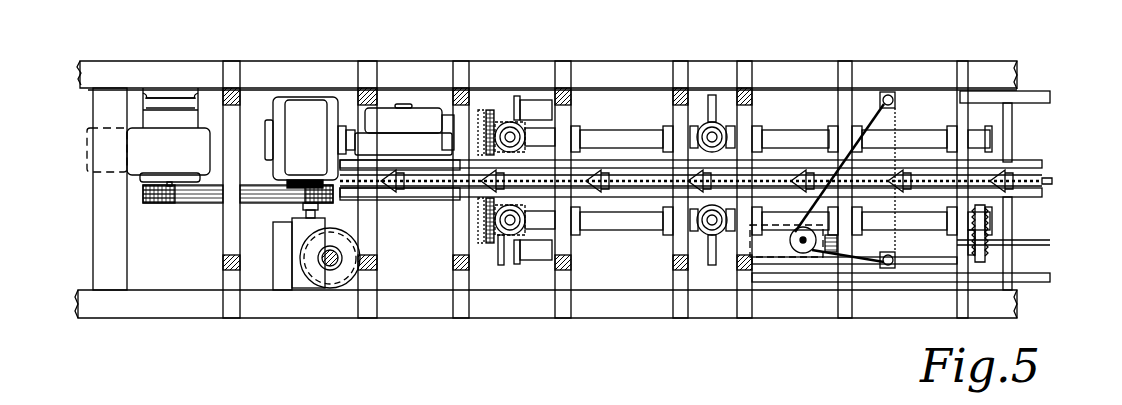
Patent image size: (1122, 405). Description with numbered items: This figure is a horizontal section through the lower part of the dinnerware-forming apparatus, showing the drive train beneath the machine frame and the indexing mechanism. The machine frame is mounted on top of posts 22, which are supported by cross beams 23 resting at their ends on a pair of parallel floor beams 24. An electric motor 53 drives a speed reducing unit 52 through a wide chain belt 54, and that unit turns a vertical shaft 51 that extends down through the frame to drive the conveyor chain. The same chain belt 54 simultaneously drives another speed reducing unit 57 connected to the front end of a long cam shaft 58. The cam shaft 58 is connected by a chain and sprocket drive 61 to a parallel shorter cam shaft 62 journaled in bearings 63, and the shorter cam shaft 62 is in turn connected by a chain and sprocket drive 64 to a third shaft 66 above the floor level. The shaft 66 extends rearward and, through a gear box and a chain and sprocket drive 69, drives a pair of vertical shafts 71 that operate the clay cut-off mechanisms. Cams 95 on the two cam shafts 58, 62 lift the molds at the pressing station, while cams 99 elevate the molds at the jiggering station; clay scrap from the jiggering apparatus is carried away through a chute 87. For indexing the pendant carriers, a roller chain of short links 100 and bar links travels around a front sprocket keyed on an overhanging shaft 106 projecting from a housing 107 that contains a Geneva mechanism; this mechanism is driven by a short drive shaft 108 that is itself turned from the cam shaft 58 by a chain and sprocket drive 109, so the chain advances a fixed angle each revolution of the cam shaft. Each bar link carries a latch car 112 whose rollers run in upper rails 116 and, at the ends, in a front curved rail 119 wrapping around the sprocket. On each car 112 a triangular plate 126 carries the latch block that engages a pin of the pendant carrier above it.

The posts 22 is at (377, 273).
The cross beams 23 is at (224, 248).
The floor beams 24 is at (78, 72).
The vertical shaft 51 is at (330, 263).
The speed reducing unit 52 is at (340, 268).
The electric motor 53 is at (148, 137).
The chain belt 54 is at (252, 198).
The speed reducing unit 57 is at (310, 142).
The cam shaft 58 is at (594, 139).
The chain and sprocket drive 61 is at (520, 103).
The cam shaft 62 is at (645, 220).
The bearings 63 is at (573, 230).
The chain and sprocket drive 64 is at (990, 242).
The shaft 66 is at (1050, 245).
The chain and sprocket drive 69 is at (788, 250).
The vertical shafts 71 is at (888, 93).
The chute 87 is at (533, 260).
The cams 95 is at (714, 95).
The cams 99 is at (520, 122).
The short links 100 is at (1054, 181).
The overhanging shaft 106 is at (405, 128).
The housing 107 is at (403, 144).
The drive shaft 108 is at (481, 110).
The chain and sprocket drive 109 is at (490, 110).
The latch car 112 is at (1000, 172).
The upper rails 116 is at (1042, 165).
The front curved rail 119 is at (383, 197).
The triangular plate 126 is at (600, 170).